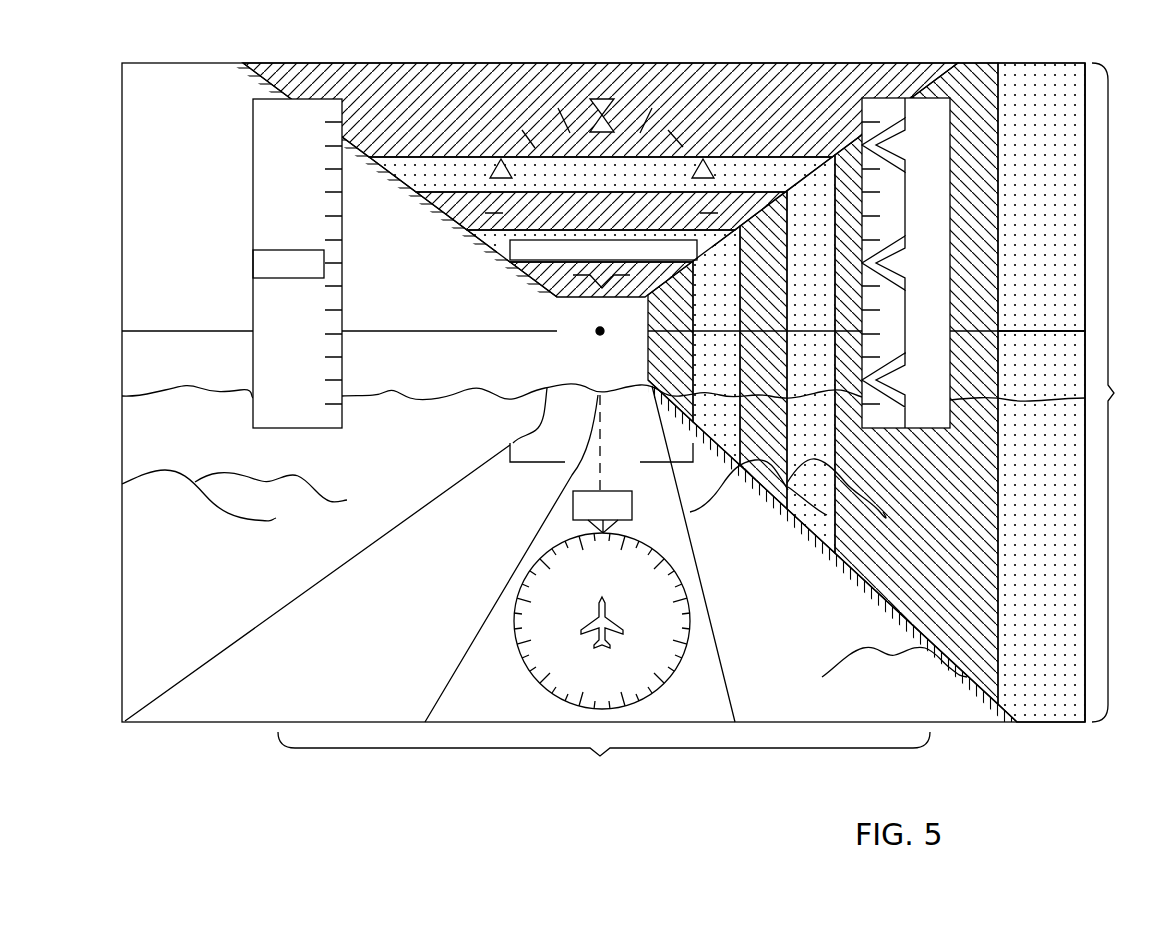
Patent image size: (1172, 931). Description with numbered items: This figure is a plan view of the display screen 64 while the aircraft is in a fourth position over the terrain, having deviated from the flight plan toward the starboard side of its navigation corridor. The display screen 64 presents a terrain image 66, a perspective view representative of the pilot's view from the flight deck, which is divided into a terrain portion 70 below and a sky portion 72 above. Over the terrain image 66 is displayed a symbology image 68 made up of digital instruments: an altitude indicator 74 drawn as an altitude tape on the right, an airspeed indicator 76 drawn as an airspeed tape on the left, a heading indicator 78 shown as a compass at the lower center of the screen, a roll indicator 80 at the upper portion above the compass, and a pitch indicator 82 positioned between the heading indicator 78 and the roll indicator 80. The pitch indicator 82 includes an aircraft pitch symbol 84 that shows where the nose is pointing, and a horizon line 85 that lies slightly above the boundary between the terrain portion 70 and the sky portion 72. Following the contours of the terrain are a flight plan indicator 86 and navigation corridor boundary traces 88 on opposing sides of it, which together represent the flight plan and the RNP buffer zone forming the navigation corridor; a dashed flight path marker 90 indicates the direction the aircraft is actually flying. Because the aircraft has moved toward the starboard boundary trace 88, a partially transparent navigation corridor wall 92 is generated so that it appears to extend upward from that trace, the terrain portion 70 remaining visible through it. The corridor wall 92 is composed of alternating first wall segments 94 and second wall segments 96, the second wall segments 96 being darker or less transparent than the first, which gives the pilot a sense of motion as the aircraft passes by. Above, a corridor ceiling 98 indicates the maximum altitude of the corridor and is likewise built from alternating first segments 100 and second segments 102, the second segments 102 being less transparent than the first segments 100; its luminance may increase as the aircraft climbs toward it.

The display screen 64 is at (203, 62).
The terrain image 66 is at (1123, 392).
The symbology image 68 is at (604, 759).
The terrain portion 70 is at (1051, 487).
The sky portion 72 is at (1051, 119).
The altitude indicator 74 is at (893, 97).
The airspeed indicator 76 is at (253, 188).
The heading indicator 78 is at (518, 582).
The roll indicator 80 is at (510, 146).
The pitch indicator 82 is at (552, 263).
The aircraft pitch symbol 84 is at (600, 337).
The horizon line 85 is at (172, 328).
The flight plan indicator 86 is at (562, 497).
The navigation corridor boundary traces 88 is at (318, 580).
The flight path marker 90 is at (606, 452).
The navigation corridor wall 92 is at (855, 574).
The first wall segments 94 is at (1085, 516).
The second wall segments 96 is at (975, 78).
The corridor ceiling 98 is at (513, 72).
The first segments 100 is at (452, 214).
The second segments 102 is at (412, 72).